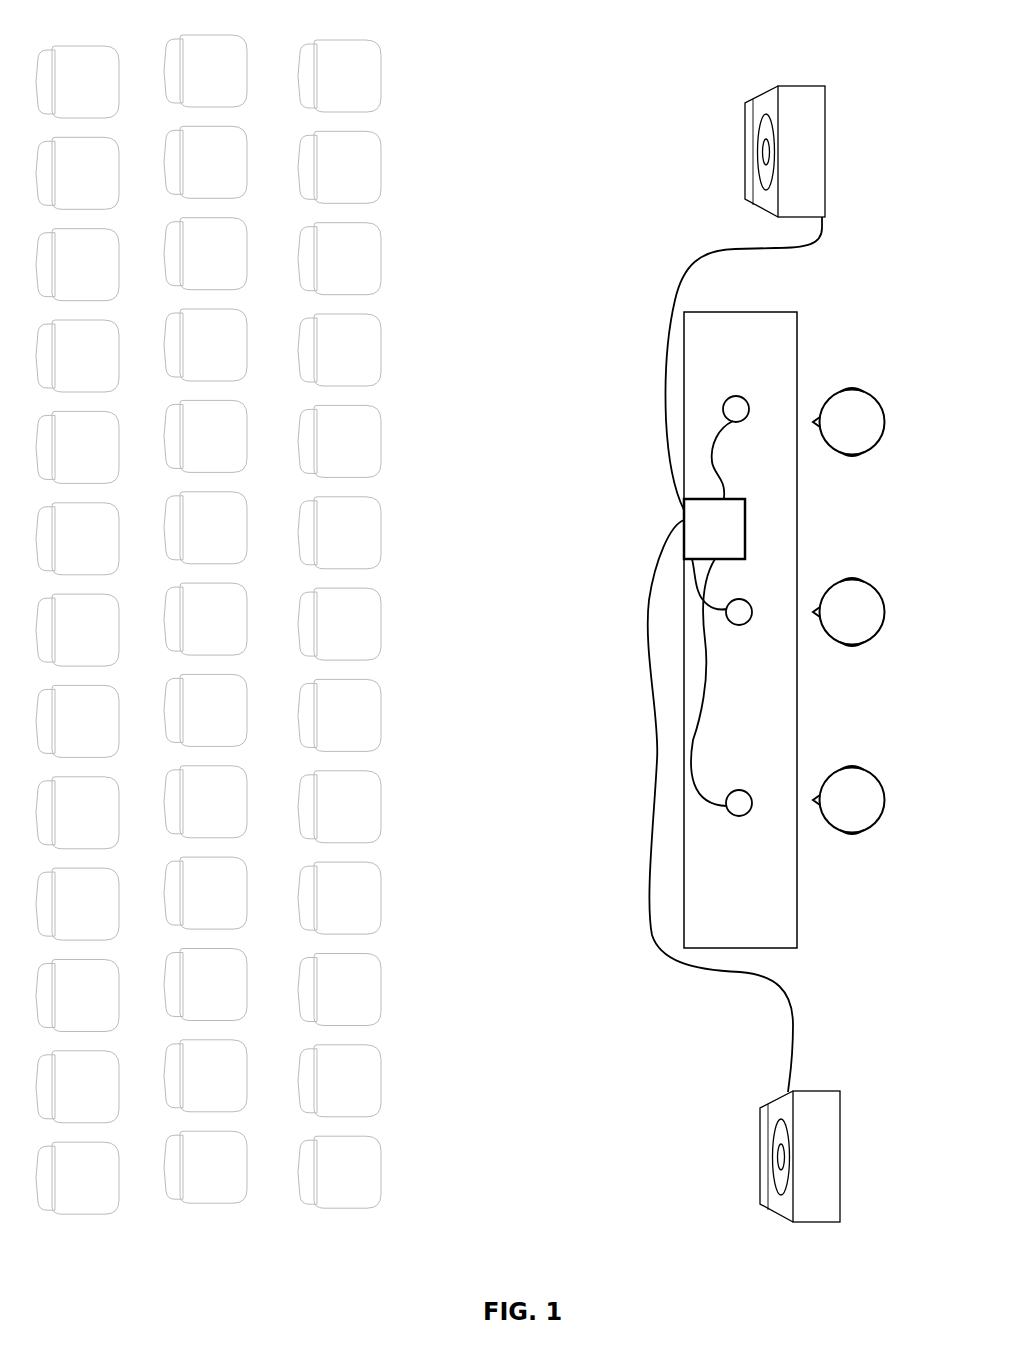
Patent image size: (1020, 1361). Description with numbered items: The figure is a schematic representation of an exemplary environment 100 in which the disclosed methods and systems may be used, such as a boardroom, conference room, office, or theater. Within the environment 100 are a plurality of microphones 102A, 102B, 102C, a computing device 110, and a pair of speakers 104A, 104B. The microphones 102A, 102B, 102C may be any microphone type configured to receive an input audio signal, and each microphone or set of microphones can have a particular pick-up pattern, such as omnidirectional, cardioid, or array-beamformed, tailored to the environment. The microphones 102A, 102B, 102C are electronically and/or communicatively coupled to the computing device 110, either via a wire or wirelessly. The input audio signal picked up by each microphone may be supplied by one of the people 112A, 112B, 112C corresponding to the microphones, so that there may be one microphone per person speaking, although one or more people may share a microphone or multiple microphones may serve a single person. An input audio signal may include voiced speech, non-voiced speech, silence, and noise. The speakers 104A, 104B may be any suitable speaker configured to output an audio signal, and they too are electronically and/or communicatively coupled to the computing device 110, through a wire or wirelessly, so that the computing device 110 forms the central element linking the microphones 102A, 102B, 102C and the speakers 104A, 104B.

The audio system / venue 100 is at (510, 16).
The microphone 102A is at (722, 404).
The microphone 102B is at (737, 611).
The microphone 102C is at (737, 801).
The speaker 104A is at (812, 148).
The speaker 104B is at (825, 1158).
The computing device 110 is at (703, 537).
The person 112A is at (858, 398).
The person 112B is at (840, 612).
The person 112C is at (858, 808).